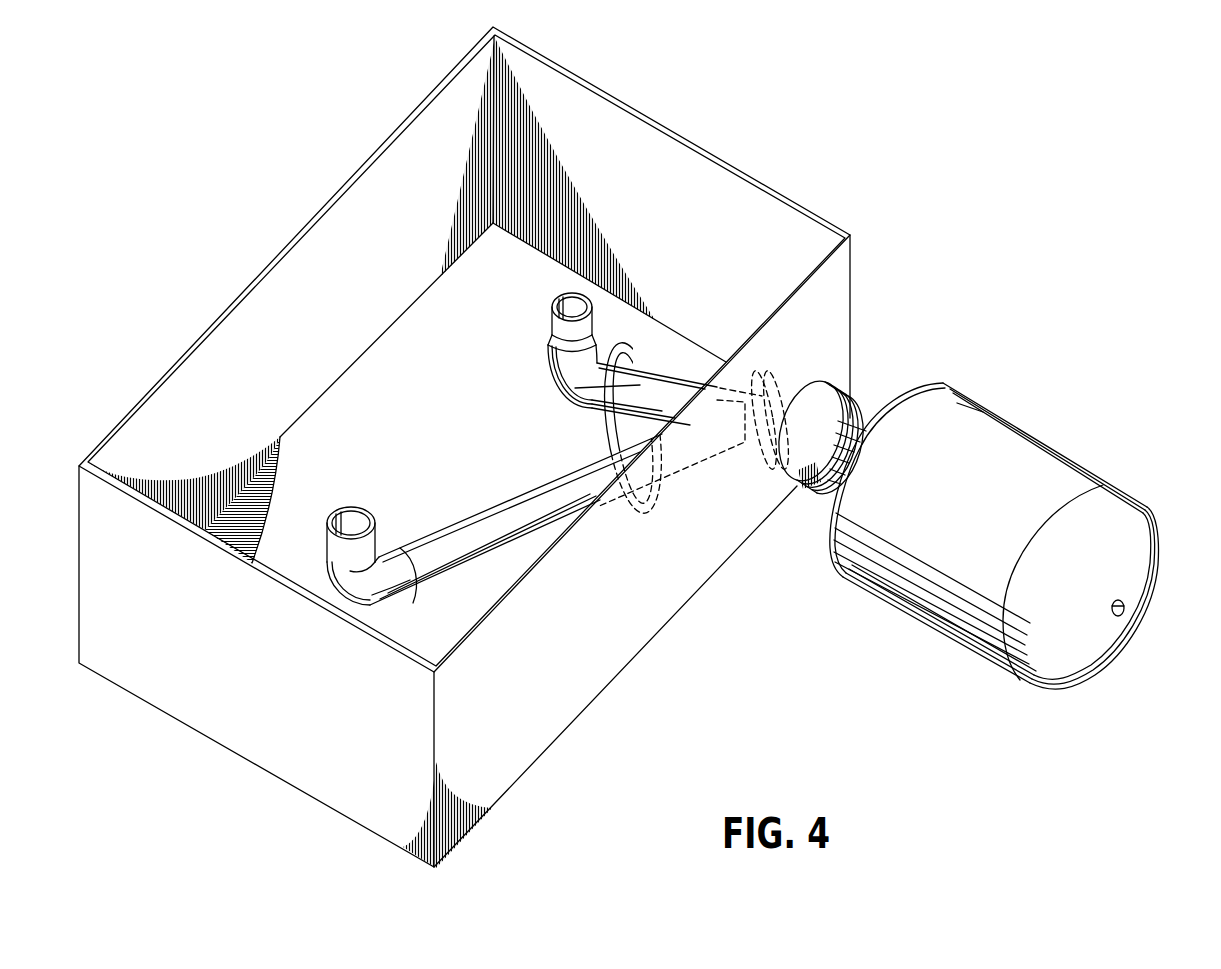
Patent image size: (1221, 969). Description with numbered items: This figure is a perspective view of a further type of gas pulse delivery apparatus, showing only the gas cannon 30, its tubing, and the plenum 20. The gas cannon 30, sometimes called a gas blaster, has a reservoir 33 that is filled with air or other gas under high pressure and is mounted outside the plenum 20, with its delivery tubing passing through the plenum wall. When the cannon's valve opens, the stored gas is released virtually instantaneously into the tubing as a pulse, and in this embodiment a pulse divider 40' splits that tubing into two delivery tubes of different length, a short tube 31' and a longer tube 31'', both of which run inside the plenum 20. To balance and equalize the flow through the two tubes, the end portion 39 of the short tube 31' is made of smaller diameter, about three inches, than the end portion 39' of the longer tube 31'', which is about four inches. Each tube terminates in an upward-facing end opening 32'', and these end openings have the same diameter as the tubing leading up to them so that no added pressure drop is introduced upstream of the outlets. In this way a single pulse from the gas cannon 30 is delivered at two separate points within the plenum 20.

The plenum 20 is at (672, 182).
The gas cannon 30 is at (1038, 376).
The reservoir 33 is at (1040, 470).
The short tube 31' is at (623, 404).
The longer tube 31'' is at (516, 519).
The end opening 32'' is at (488, 376).
The end portion of the short tube 39 is at (546, 365).
The end portion of the longer tube 39' is at (340, 542).
The pulse divider 40' is at (609, 308).